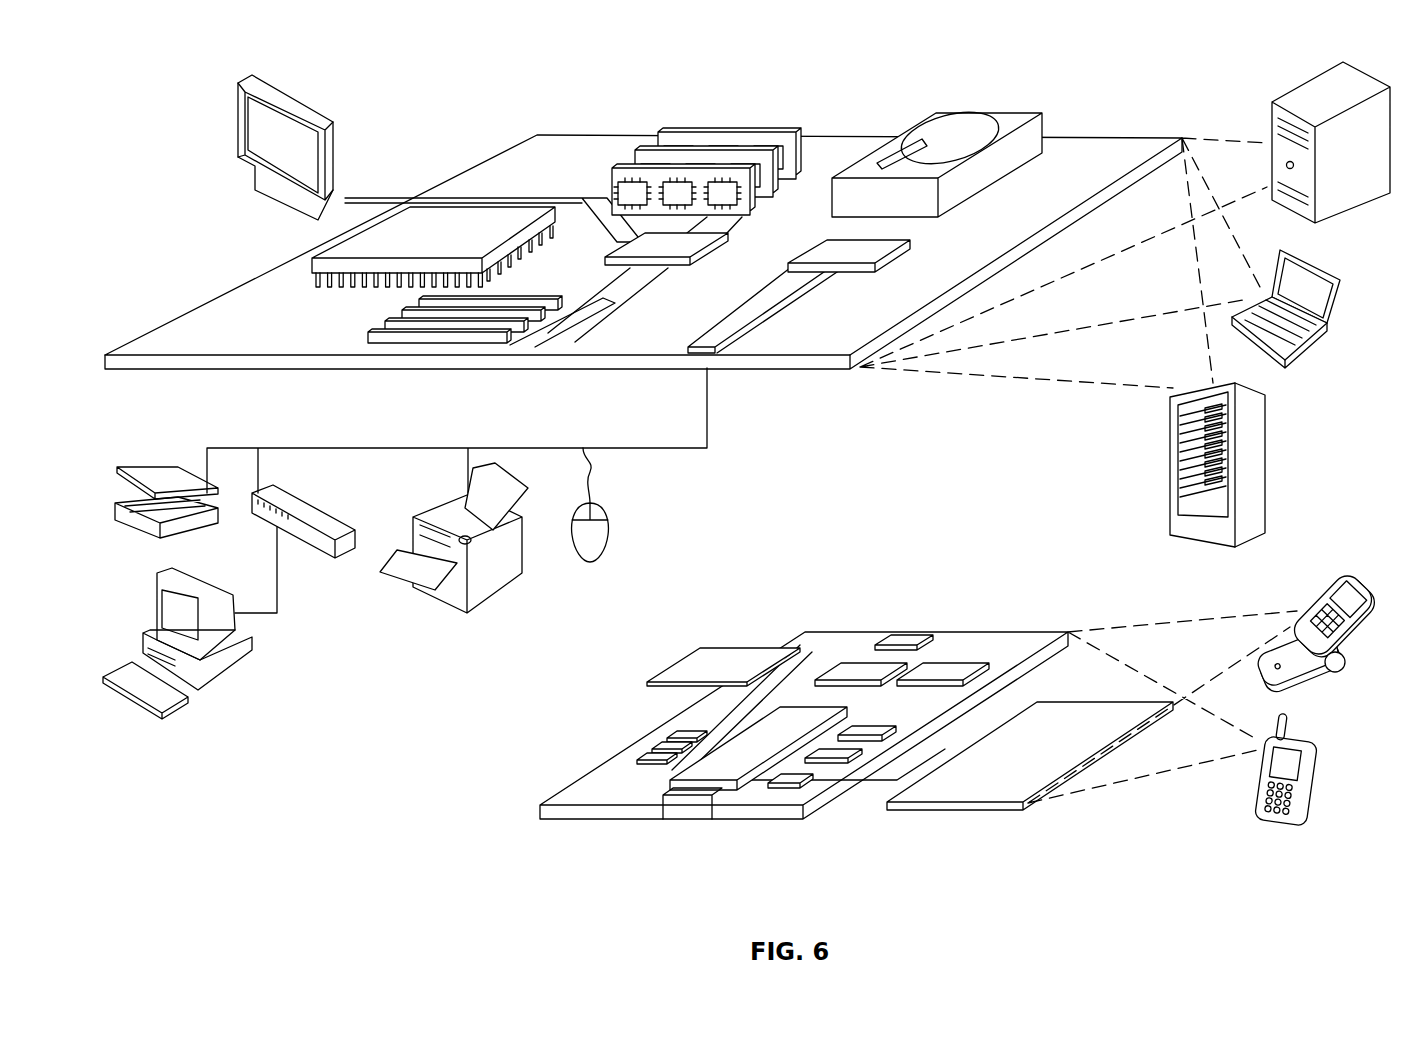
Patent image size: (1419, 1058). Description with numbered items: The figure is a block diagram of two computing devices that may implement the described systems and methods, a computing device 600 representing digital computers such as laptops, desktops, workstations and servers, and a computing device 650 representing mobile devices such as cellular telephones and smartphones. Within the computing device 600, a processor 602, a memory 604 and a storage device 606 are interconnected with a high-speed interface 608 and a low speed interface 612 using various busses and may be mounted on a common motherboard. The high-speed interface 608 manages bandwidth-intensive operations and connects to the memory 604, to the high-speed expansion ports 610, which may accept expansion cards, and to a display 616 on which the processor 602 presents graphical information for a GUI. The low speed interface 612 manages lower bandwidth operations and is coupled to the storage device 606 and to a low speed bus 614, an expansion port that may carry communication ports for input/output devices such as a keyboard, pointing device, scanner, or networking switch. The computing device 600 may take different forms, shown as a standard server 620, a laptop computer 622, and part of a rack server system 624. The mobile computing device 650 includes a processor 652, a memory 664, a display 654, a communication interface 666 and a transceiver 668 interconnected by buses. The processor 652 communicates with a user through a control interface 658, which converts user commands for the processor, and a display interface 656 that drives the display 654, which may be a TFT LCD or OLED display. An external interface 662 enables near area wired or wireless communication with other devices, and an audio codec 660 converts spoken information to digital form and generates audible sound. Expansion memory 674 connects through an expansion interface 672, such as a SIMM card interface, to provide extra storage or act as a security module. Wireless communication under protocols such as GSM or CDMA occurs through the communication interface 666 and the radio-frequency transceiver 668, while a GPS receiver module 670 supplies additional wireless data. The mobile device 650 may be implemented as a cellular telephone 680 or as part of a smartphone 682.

The computing device 600 is at (456, 108).
The processor 602 is at (320, 266).
The memory 604 is at (684, 134).
The storage device 606 is at (932, 130).
The high-speed interface 608 is at (642, 245).
The high-speed expansion ports 610 is at (393, 324).
The low speed interface 612 is at (828, 248).
The low speed bus 614 is at (714, 357).
The display 616 is at (246, 77).
The standard server 620 is at (1272, 117).
The laptop computer 622 is at (1340, 283).
The rack server system 624 is at (1170, 493).
The computing device 650 is at (514, 821).
The processor 652 is at (731, 773).
The display 654 is at (988, 790).
The display interface 656 is at (803, 788).
The control interface 658 is at (841, 765).
The audio codec 660 is at (869, 742).
The external interface 662 is at (693, 806).
The memory 664 is at (634, 766).
The communication interface 666 is at (860, 672).
The transceiver 668 is at (940, 672).
The GPS receiver module 670 is at (915, 638).
The expansion interface 672 is at (786, 643).
The expansion memory 674 is at (700, 648).
The mobile phone 680 is at (1321, 586).
The smartphone 682 is at (1258, 776).